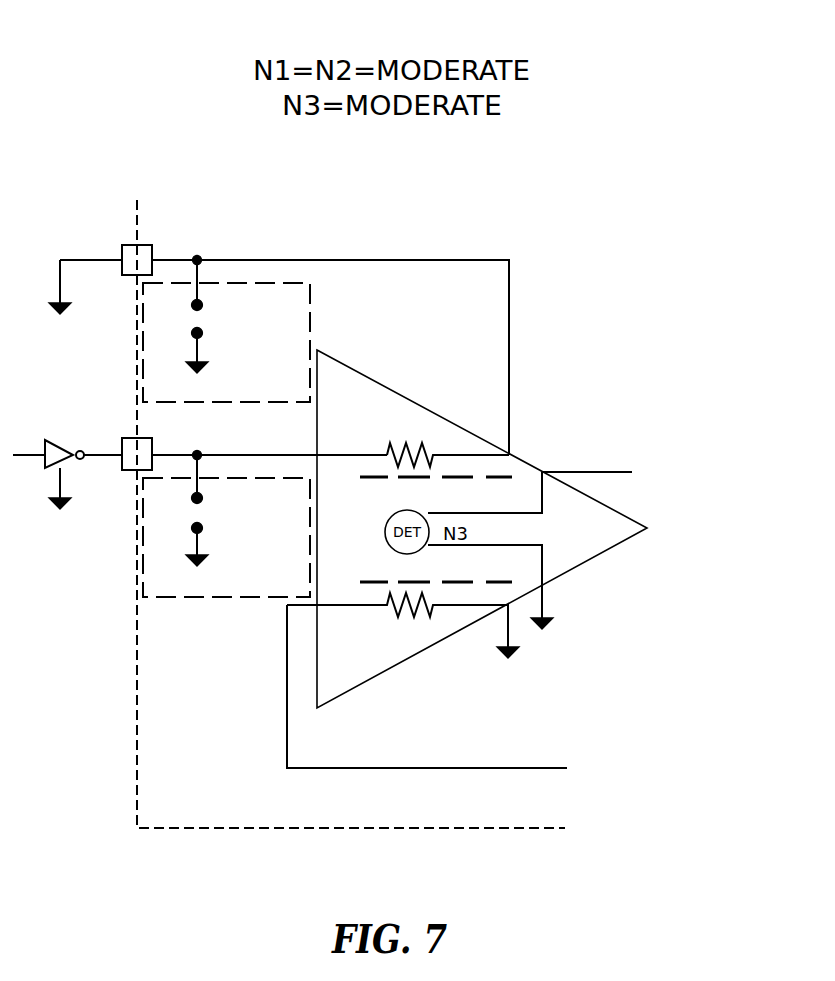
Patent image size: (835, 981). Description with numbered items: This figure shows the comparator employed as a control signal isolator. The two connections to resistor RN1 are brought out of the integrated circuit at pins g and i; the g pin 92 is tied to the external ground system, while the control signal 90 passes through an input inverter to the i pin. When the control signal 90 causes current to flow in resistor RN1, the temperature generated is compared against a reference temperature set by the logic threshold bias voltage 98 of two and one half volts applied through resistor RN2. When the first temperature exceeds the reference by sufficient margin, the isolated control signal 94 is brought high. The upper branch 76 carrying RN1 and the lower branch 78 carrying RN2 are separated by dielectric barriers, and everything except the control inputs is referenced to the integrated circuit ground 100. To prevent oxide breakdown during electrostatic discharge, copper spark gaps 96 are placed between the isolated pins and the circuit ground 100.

The control signal 90 is at (29, 455).
The ground pad (g) to external ground system 92 is at (90, 258).
The isolated control signal 94 is at (632, 472).
The spark gaps 96 is at (227, 402).
The differential comparator upper (positive) input stage with RN1 76 is at (353, 402).
The differential comparator lower (negative) input stage with RN2 78 is at (355, 657).
The logic threshold bias voltage 98 is at (353, 768).
The integrated circuit ground 100 is at (545, 610).